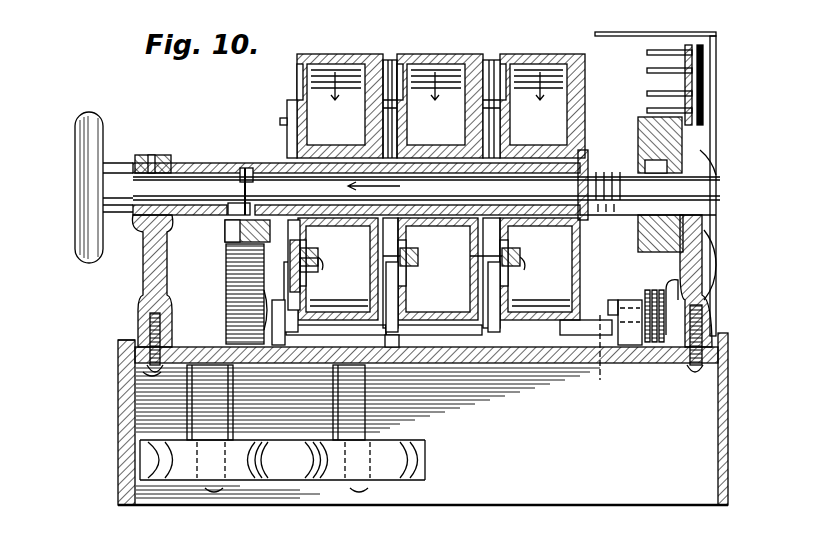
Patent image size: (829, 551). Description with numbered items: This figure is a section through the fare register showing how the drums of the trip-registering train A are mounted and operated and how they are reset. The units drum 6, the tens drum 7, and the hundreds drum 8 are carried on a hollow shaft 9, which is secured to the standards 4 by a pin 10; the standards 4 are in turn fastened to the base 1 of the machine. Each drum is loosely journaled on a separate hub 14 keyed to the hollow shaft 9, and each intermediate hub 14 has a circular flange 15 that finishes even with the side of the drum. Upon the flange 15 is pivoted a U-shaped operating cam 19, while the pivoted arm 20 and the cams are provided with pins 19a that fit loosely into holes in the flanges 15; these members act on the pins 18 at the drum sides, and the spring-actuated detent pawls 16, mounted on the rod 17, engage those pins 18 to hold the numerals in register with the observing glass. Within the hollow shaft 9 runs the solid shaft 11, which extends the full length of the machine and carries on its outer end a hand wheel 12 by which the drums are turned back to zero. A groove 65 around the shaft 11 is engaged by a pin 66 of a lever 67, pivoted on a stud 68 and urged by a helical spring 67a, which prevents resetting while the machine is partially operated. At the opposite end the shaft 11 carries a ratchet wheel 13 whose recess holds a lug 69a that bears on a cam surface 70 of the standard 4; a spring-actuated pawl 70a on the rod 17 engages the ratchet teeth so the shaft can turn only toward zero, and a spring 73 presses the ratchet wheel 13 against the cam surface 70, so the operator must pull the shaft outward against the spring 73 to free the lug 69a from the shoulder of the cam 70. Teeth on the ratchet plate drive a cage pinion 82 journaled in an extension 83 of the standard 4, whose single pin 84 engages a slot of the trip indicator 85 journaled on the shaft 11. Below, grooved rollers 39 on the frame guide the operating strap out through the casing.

The base 1 is at (423, 419).
The standards 4 is at (172, 164).
The units drum 6 is at (328, 54).
The tens drum 7 is at (440, 54).
The hundreds drum 8 is at (532, 54).
The trip-registering train A is at (390, 58).
The hollow shaft 9 is at (210, 163).
The pin 10 is at (151, 155).
The solid shaft 11 is at (745, 182).
The hand wheel 12 is at (82, 212).
The ratchet wheel 13 is at (712, 160).
The hub 14 is at (449, 276).
The circular flange 15 is at (313, 116).
The detent pawl 16 is at (392, 336).
The rod 17 is at (278, 312).
The pin 18 is at (297, 83).
The U-shaped operating cam 19 is at (488, 252).
The pin 19a is at (385, 270).
The pivoted arm 20 is at (285, 110).
The grooved roller 39 is at (182, 470).
The groove 65 is at (247, 168).
The pin 66 is at (225, 228).
The lever 67 is at (289, 250).
The helical spring 67a is at (246, 300).
The stud 68 is at (240, 246).
The lug 69a is at (650, 160).
The cam surface 70 is at (716, 218).
The spring-actuated pawl 70a is at (666, 282).
The spring 73 is at (607, 209).
The cage pinion 82 is at (700, 97).
The extension 83 is at (700, 62).
The pin 84 is at (706, 110).
The trip indicator 85 is at (668, 32).